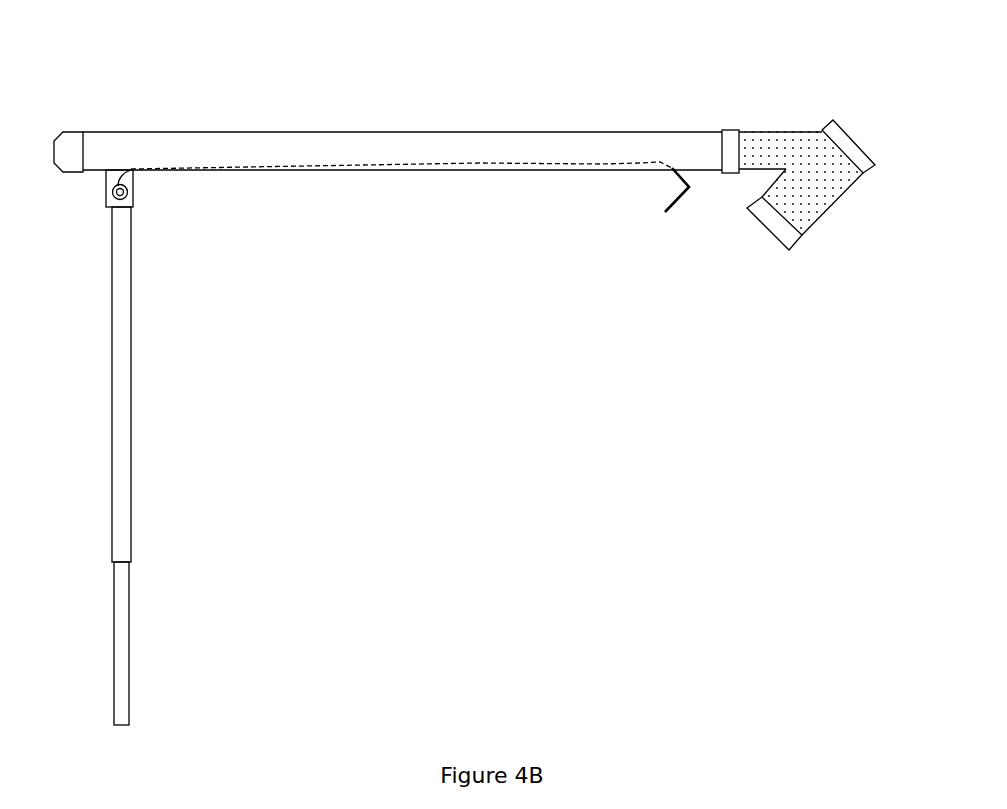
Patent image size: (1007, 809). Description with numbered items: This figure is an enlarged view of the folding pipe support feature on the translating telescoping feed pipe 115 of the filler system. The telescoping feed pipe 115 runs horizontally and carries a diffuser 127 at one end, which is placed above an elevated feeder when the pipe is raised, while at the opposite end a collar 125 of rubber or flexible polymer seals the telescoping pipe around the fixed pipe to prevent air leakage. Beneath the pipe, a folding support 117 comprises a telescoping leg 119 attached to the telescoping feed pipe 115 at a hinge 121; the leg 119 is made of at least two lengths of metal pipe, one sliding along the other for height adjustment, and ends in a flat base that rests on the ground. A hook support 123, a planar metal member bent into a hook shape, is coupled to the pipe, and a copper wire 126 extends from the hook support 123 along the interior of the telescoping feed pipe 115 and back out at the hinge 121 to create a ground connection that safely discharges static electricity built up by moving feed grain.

The telescoping feed pipe 115 is at (210, 150).
The folding support 117 is at (175, 352).
The telescoping leg 119 is at (120, 438).
The hinge 121 is at (127, 191).
The hook support 123 is at (680, 198).
The collar 125 is at (58, 155).
The copper wire 126 is at (480, 163).
The diffuser 127 is at (872, 131).